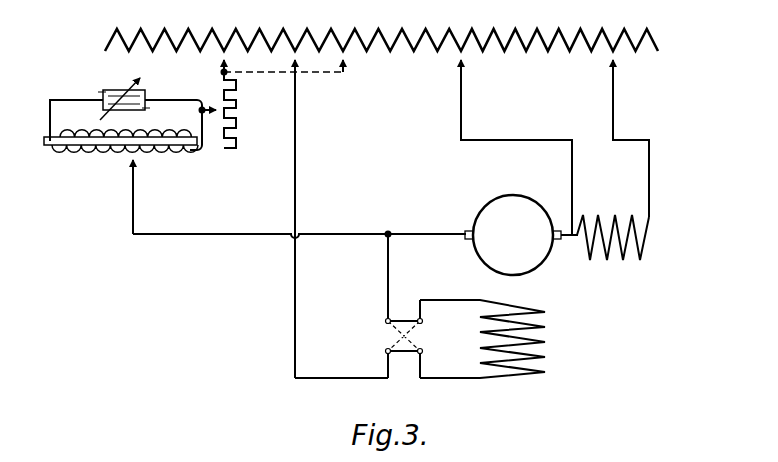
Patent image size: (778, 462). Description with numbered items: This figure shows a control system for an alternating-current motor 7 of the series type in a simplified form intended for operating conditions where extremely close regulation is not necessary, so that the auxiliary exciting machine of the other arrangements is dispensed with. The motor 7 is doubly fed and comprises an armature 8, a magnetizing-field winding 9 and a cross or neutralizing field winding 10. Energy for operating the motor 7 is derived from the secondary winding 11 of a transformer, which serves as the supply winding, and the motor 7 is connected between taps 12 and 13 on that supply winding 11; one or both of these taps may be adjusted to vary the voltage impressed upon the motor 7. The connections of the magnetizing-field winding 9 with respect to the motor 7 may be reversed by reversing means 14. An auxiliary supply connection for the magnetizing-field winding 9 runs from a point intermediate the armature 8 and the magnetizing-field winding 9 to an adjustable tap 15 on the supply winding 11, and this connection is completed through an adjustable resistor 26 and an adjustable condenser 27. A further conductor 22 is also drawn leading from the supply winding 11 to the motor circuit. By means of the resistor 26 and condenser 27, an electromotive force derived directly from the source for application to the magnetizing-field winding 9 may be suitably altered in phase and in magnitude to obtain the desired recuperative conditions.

The alternating-current motor 7 is at (574, 301).
The armature 8 is at (509, 206).
The magnetizing-field winding 9 is at (547, 342).
The cross or neutralizing field winding 10 is at (620, 260).
The secondary winding 11 is at (380, 35).
The tap 12 is at (297, 80).
The tap 13 is at (613, 85).
The reversing means 14 is at (403, 354).
The tap 15 is at (224, 66).
The conductor 22 is at (461, 85).
The adjustable resistor 26 is at (236, 103).
The adjustable condenser 27 is at (145, 99).